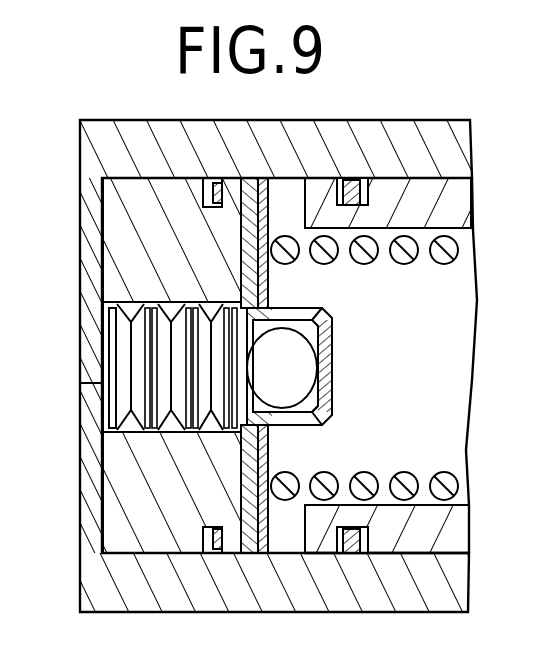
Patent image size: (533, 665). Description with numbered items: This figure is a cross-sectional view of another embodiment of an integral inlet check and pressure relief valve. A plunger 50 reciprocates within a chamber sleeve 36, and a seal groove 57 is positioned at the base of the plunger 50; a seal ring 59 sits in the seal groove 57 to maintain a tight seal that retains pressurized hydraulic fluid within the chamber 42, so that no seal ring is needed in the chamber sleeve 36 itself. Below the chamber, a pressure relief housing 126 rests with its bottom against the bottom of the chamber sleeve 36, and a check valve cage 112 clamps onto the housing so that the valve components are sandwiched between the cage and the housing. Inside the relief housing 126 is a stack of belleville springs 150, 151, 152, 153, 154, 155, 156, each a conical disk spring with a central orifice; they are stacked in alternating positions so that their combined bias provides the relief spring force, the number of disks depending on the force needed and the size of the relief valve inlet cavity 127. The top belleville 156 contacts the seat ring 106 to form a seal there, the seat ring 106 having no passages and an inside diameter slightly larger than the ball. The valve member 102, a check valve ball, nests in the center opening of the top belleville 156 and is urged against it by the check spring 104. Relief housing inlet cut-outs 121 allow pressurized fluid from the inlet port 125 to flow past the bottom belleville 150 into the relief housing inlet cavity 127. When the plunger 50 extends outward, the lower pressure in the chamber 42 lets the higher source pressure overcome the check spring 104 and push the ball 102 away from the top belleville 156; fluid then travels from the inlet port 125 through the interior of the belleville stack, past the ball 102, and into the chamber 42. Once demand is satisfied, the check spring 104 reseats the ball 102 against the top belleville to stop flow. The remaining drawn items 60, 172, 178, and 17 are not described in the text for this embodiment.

The chamber sleeve 36 is at (458, 163).
The chamber 42 is at (460, 302).
The plunger 50 is at (457, 212).
The seal groove 57 is at (380, 188).
The seal ring 59 is at (353, 185).
The spring coils 60 is at (458, 249).
The valve member 102 is at (292, 338).
The check spring 104 is at (318, 404).
The seat ring 106 is at (250, 538).
The check valve cage 112 is at (333, 370).
The relief housing inlet cut-outs 121 is at (100, 405).
The inlet port 125 is at (100, 372).
The pressure relief housing 126 is at (150, 490).
The relief valve inlet cavity 127 is at (125, 445).
The bottom belleville spring 150 is at (110, 342).
The belleville spring 151 is at (110, 320).
The belleville spring 152 is at (110, 300).
The belleville spring 153 is at (170, 312).
The belleville spring 154 is at (185, 306).
The belleville spring 155 is at (200, 306).
The top belleville spring 156 is at (262, 305).
The lower spring coils 172 is at (397, 489).
The lower end plate 178 is at (528, 452).
The base 17 is at (419, 576).